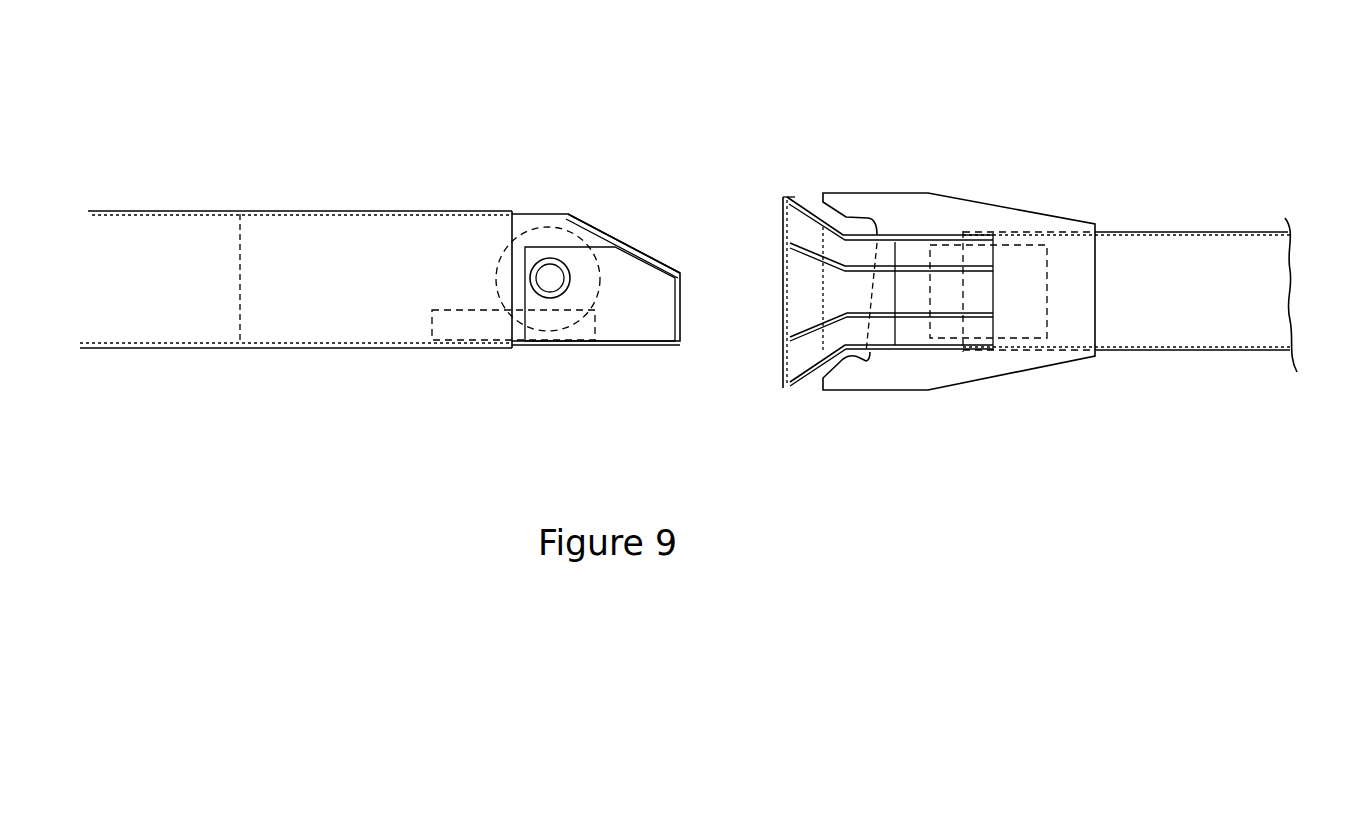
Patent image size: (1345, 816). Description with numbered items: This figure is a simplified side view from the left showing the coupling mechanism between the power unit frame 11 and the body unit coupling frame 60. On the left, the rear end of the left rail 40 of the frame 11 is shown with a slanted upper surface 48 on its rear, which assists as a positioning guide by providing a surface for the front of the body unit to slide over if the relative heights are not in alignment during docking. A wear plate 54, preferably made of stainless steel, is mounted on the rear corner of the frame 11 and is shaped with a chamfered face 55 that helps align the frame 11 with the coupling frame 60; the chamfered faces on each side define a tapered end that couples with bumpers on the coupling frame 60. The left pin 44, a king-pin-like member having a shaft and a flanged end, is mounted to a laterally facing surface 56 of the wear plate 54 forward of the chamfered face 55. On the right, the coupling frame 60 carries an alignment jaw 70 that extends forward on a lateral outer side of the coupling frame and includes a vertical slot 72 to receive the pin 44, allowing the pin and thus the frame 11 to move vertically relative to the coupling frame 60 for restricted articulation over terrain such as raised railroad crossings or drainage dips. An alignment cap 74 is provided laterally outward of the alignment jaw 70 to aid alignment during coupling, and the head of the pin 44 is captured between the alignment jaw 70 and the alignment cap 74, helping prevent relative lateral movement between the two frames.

The frame 11 is at (240, 182).
The left rail 40 is at (250, 350).
The left pin 44 is at (523, 232).
The slanted upper surface 48 is at (630, 237).
The wear plate 54 is at (642, 341).
The chamfered face 55 is at (643, 295).
The laterally facing surface 56 is at (540, 333).
The coupling frame 60 is at (1032, 174).
The alignment jaw 70 is at (925, 190).
The vertical slot 72 is at (848, 357).
The alignment cap 74 is at (782, 311).